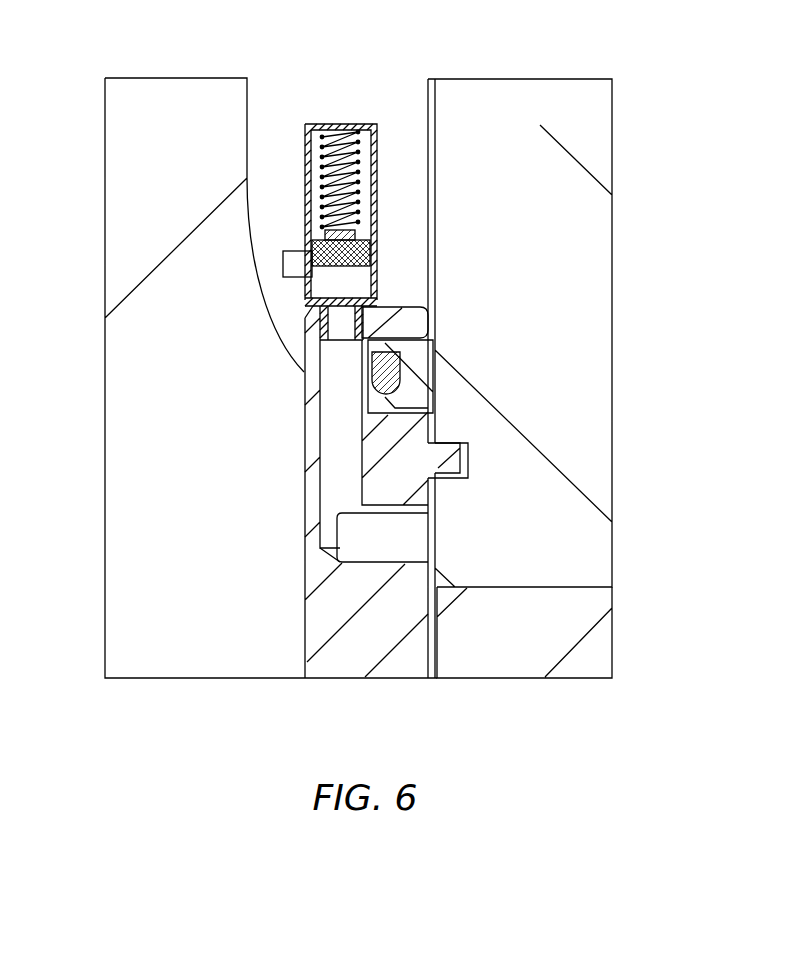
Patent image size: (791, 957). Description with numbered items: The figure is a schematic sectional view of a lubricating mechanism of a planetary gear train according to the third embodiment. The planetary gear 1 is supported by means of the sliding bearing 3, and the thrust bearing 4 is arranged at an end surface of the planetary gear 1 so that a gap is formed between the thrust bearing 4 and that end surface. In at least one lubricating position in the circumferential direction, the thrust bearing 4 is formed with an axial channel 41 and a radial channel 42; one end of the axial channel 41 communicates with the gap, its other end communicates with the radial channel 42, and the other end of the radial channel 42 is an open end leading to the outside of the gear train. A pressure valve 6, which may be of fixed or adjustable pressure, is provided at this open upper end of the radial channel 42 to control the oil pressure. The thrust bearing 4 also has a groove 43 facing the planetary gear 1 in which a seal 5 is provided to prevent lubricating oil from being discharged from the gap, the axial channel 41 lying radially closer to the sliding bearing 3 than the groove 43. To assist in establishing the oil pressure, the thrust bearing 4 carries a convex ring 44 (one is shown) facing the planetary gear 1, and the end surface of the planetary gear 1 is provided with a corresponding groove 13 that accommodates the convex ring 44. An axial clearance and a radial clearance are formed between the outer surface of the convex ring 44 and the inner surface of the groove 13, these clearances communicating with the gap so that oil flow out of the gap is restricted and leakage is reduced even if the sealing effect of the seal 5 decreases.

The planetary gear 1 is at (566, 298).
The sliding bearing 3 is at (545, 632).
The thrust bearing 4 is at (347, 613).
The seal 5 is at (414, 366).
The pressure valve 6 is at (326, 190).
The groove 13 is at (482, 467).
The axial channel 41 is at (402, 548).
The radial channel 42 is at (343, 450).
The groove 43 is at (401, 324).
The convex ring 44 is at (444, 454).